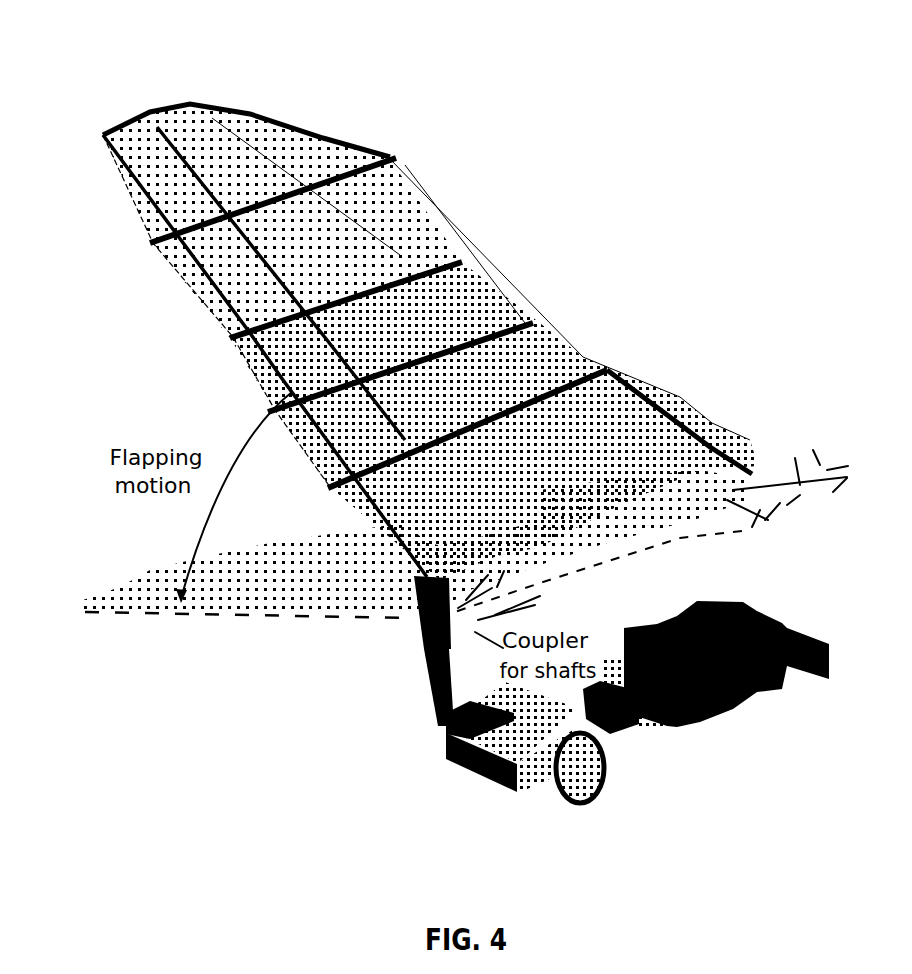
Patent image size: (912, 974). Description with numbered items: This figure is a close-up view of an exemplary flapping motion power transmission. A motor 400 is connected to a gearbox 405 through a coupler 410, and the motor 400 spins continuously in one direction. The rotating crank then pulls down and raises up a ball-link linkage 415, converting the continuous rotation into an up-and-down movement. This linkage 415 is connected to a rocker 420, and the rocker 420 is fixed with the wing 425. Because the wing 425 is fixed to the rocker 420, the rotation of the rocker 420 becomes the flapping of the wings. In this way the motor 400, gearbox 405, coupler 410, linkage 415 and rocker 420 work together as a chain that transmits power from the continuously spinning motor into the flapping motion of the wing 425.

The motor 400 is at (732, 703).
The gearbox 405 is at (480, 773).
The coupler 410 is at (610, 788).
The ball-link linkage 415 is at (333, 656).
The rocker 420 is at (493, 550).
The wing 425 is at (325, 118).